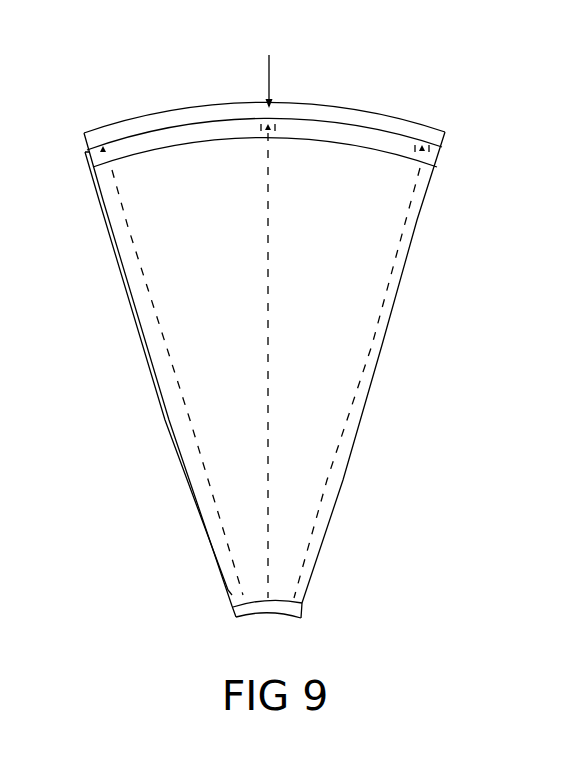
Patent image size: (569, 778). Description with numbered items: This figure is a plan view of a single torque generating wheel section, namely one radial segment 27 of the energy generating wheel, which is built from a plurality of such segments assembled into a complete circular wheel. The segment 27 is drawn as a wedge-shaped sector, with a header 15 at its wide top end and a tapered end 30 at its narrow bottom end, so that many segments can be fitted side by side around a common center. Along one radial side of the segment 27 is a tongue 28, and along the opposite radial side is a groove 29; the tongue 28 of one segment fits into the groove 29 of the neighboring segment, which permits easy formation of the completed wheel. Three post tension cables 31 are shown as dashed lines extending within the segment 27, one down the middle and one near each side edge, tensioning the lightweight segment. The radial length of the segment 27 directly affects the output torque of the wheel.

The header 15 is at (433, 157).
The radial segment 27 is at (106, 259).
The tongue 28 is at (145, 345).
The groove 29 is at (381, 345).
The tapered end 30 is at (236, 612).
The post tension cables 31 is at (267, 205).